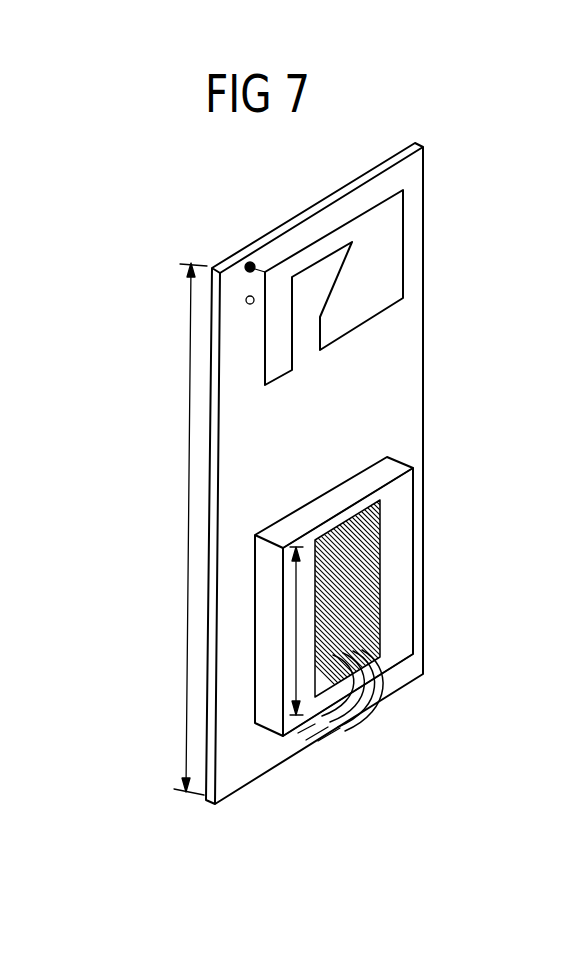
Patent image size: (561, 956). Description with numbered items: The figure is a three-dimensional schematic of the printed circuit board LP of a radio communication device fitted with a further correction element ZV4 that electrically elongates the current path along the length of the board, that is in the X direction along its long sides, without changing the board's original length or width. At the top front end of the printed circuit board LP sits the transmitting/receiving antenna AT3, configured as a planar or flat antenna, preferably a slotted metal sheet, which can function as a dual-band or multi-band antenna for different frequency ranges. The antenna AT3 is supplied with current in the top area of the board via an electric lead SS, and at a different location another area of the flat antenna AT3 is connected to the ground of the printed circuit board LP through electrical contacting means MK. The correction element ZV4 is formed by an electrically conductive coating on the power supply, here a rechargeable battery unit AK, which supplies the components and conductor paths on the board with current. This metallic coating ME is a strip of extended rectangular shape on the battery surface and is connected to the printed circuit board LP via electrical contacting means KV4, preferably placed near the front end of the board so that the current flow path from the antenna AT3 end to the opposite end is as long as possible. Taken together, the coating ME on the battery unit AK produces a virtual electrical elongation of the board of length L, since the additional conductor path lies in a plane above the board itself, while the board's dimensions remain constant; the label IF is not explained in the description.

The printed circuit board LP is at (390, 410).
The transmitting/receiving antenna AT3 is at (347, 300).
The electrical contacting means MK is at (254, 263).
The electric lead SS is at (254, 301).
The length of the printed circuit board L is at (189, 522).
The interface IF is at (11, 334).
The correction element ZV4 is at (413, 528).
The rechargeable battery unit AK is at (397, 600).
The electrically conductive coating ME is at (352, 542).
The electrical contacting means KV4 is at (377, 696).